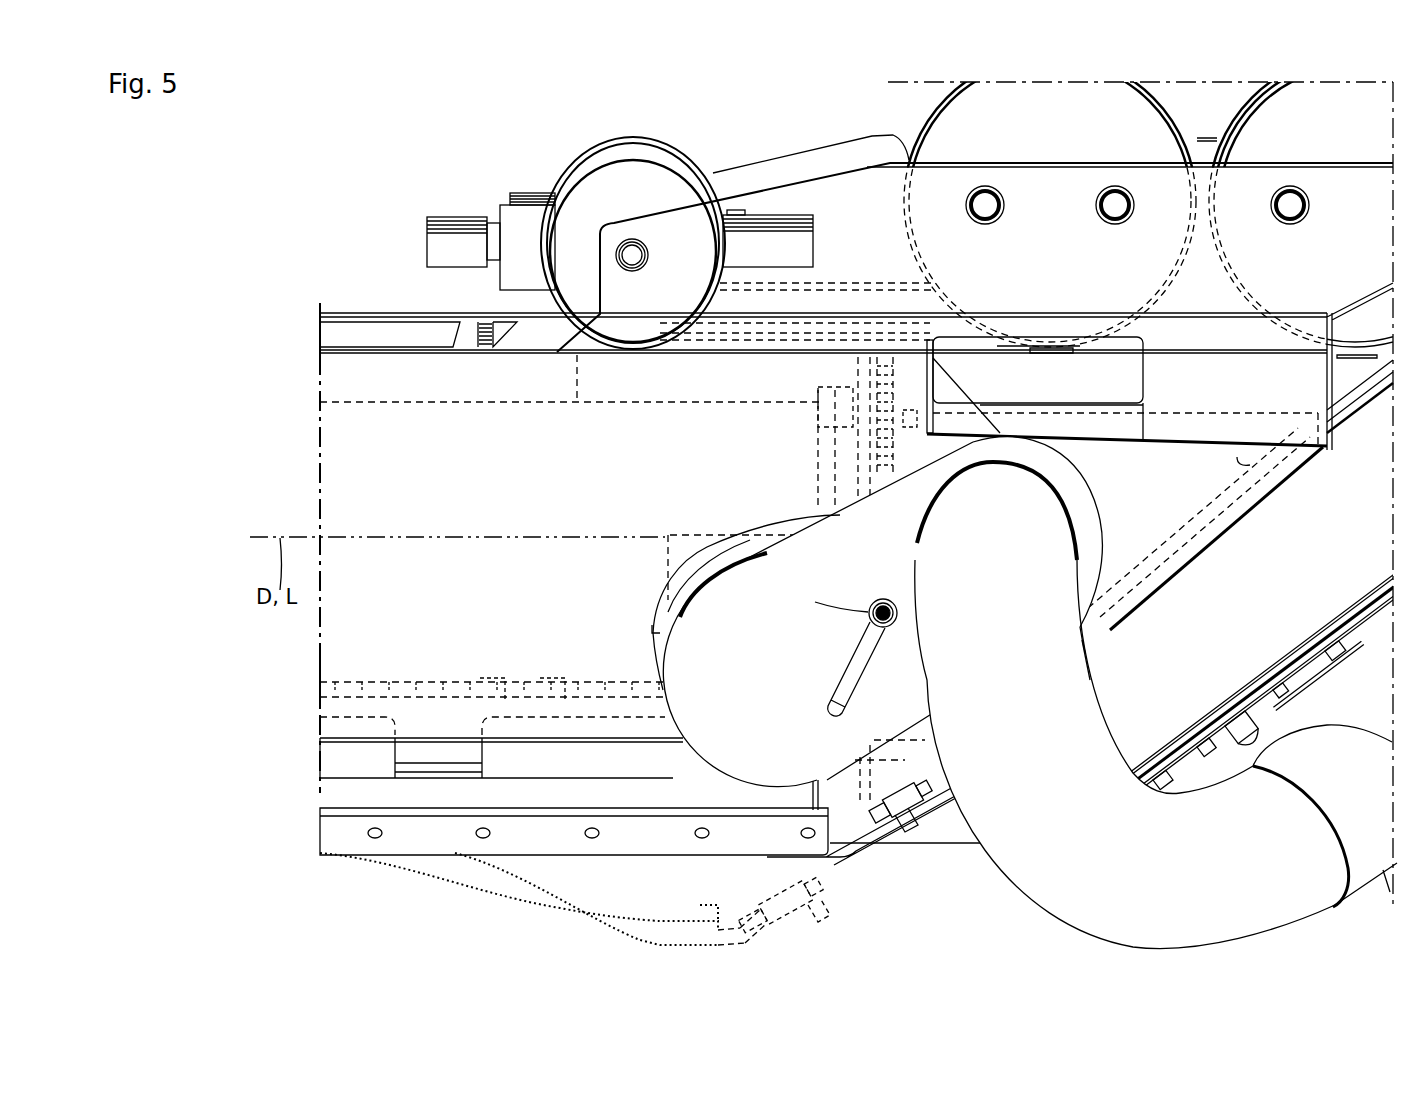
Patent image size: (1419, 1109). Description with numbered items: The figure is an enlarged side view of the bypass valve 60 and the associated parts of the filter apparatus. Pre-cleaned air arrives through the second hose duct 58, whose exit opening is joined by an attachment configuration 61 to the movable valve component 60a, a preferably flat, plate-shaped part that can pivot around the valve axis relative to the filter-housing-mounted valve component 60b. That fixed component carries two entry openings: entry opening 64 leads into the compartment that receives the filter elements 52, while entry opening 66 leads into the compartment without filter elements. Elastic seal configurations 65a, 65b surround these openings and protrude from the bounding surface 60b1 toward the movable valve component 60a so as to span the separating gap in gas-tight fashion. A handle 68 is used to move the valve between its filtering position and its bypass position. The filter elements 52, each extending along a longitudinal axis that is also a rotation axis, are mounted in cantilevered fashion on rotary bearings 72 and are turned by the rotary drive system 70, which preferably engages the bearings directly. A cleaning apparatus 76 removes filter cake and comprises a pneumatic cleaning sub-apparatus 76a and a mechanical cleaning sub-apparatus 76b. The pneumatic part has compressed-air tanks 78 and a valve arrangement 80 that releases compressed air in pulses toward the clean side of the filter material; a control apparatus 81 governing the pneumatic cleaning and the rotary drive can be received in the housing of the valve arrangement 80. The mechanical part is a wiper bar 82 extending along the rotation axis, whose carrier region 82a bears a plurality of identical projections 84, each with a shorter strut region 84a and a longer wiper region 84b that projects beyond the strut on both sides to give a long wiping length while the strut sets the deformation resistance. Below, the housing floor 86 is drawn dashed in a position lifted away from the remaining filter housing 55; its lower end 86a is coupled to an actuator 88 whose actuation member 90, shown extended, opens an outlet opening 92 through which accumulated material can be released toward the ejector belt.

The filter element 52 is at (497, 483).
The remaining filter housing 55 is at (288, 793).
The second hose duct 58 is at (1156, 754).
The bypass valve 60 is at (960, 693).
The movable valve component 60a is at (727, 740).
The filter-housing-mounted valve component 60b is at (660, 612).
The bounding surface 60b1 is at (652, 628).
The attachment configuration 61 is at (910, 546).
The entry opening 64 is at (738, 566).
The elastic seal configuration 65a is at (683, 600).
The elastic seal configuration 65b is at (1084, 645).
The entry opening 66 is at (1082, 628).
The handle 68 is at (860, 667).
The rotary drive system 70 is at (886, 345).
The rotary bearing 72 is at (847, 400).
The cleaning apparatus 76 is at (574, 186).
The pneumatic cleaning sub-apparatus 76a is at (470, 168).
The mechanical cleaning sub-apparatus 76b is at (302, 682).
The compressed-air tank 78 is at (1085, 146).
The valve arrangement 80 is at (614, 214).
The control apparatus 81 is at (648, 214).
The wiper bar 82 is at (452, 719).
The carrier region 82a is at (463, 726).
The projection 84 is at (410, 672).
The strut region 84a is at (492, 690).
The wiper region 84b is at (553, 685).
The housing floor 86 is at (530, 883).
The lower end 86a is at (645, 955).
The actuator 88 is at (906, 850).
The actuation member 90 is at (830, 873).
The outlet opening 92 is at (690, 878).